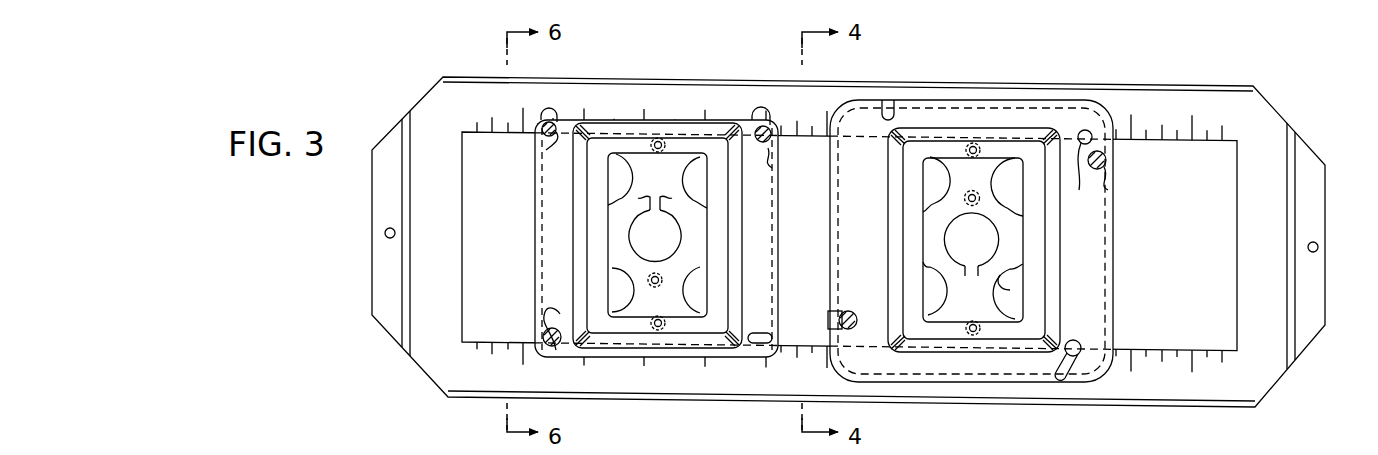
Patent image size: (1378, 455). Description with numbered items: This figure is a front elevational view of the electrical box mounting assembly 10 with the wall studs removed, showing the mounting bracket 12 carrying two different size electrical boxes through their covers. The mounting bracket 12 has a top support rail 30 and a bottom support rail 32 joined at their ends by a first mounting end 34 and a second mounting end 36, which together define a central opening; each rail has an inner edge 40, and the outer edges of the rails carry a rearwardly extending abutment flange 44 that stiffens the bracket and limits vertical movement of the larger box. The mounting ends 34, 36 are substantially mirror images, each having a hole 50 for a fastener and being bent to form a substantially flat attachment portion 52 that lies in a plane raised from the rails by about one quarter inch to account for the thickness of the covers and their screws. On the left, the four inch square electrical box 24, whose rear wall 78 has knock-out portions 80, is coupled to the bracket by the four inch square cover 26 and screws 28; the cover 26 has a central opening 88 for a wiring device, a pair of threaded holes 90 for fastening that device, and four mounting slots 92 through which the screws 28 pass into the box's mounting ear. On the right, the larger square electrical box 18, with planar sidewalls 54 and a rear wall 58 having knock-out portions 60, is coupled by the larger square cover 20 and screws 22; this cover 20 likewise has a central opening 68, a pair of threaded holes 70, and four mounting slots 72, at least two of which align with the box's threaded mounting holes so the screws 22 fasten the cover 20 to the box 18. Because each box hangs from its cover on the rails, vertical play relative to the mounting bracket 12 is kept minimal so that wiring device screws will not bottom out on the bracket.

The electrical box mounting assembly 10 is at (638, 74).
The mounting bracket 12 is at (417, 103).
The 4 11/16 inch square electrical box 18 is at (1108, 300).
The 4 11/16 inch square cover 20 is at (1116, 233).
The screws 22 is at (1113, 188).
The 4 inch square electrical box 24 is at (540, 236).
The 4 inch square cover 26 is at (533, 210).
The screws 28 is at (772, 167).
The top support rail 30 is at (1216, 115).
The bottom support rail 32 is at (685, 368).
The first mounting end 34 is at (442, 338).
The second mounting end 36 is at (1260, 338).
The inner edge 40 is at (1194, 142).
The abutment flange 44 is at (905, 83).
The hole 50 is at (387, 228).
The attachment portion 52 is at (382, 280).
The sidewalls 54 is at (425, 449).
The rear wall 58 is at (963, 303).
The knock-out portions 60 is at (940, 246).
The central opening 68 is at (1010, 285).
The threaded holes 70 is at (975, 143).
The mounting slots 72 is at (886, 120).
The rear wall 78 is at (643, 309).
The knock-out portions 80 is at (657, 235).
The central opening 88 is at (703, 227).
The threaded holes 90 is at (660, 140).
The mounting slots 92 is at (759, 125).